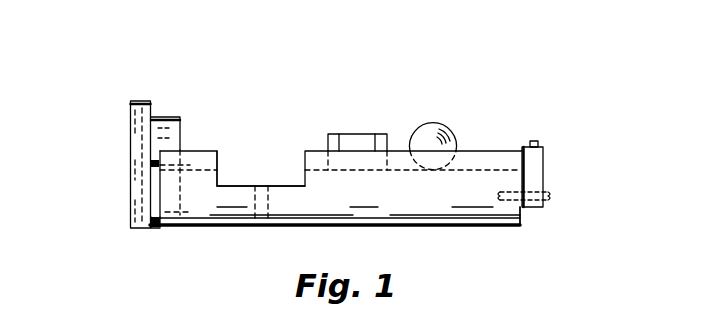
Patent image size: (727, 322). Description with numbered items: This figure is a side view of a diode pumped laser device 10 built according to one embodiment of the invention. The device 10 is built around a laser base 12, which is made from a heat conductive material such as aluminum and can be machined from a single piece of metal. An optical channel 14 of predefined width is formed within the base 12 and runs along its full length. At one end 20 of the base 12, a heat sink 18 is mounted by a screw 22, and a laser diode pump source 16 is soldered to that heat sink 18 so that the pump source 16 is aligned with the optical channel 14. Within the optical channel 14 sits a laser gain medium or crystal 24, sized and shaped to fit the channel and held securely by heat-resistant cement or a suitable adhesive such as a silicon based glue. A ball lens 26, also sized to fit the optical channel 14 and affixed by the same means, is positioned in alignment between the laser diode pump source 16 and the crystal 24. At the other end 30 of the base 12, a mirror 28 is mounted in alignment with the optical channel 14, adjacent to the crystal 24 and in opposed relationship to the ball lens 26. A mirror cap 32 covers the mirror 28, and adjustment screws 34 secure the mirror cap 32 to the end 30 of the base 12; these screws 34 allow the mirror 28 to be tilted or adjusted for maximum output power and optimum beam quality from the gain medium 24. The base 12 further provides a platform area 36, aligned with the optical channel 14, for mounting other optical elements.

The diode pumped laser device 10 is at (288, 82).
The laser base 12 is at (463, 210).
The optical channel 14 is at (300, 160).
The laser diode pump source 16 is at (538, 131).
The heat sink 18 is at (537, 164).
The end of the base 20 is at (520, 222).
The screw 22 is at (550, 200).
The laser gain medium or crystal 24 is at (360, 134).
The ball lens 26 is at (449, 128).
The mirror 28 is at (170, 117).
The other end of the base 30 is at (160, 228).
The mirror cap 32 is at (130, 115).
The adjustment screws 34 is at (152, 162).
The platform area 36 is at (238, 172).